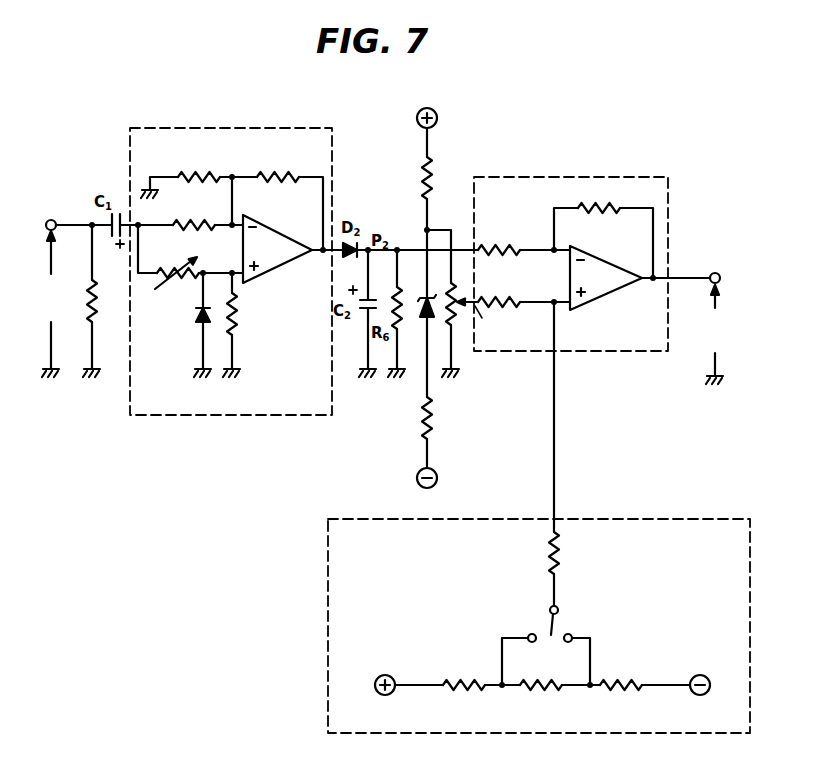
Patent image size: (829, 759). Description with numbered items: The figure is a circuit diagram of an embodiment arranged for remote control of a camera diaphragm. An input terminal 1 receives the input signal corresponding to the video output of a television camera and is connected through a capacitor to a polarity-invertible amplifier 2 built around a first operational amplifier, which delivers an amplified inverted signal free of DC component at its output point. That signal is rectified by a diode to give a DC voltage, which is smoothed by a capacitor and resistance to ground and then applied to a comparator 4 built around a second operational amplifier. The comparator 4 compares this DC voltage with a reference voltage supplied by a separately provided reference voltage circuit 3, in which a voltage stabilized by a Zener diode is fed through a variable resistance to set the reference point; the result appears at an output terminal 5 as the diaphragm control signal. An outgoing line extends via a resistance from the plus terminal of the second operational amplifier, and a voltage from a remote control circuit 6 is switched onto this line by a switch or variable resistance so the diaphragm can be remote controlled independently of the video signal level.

The input terminal 1 is at (52, 212).
The polarity-invertible amplifier 2 is at (222, 127).
The reference voltage circuit 3 is at (437, 160).
The comparator 4 is at (557, 176).
The output terminal 5 is at (713, 272).
The remote control circuit 6 is at (652, 518).